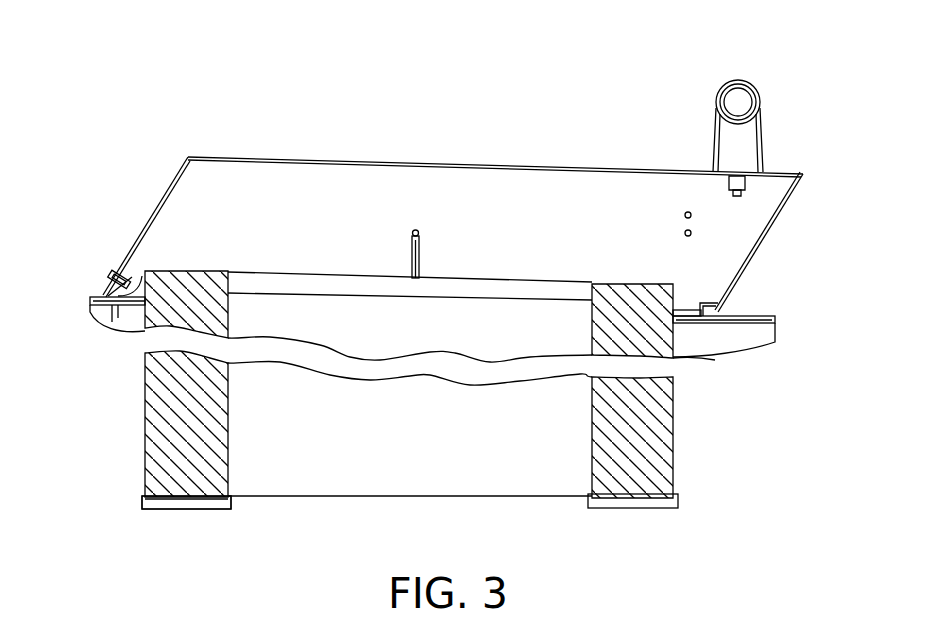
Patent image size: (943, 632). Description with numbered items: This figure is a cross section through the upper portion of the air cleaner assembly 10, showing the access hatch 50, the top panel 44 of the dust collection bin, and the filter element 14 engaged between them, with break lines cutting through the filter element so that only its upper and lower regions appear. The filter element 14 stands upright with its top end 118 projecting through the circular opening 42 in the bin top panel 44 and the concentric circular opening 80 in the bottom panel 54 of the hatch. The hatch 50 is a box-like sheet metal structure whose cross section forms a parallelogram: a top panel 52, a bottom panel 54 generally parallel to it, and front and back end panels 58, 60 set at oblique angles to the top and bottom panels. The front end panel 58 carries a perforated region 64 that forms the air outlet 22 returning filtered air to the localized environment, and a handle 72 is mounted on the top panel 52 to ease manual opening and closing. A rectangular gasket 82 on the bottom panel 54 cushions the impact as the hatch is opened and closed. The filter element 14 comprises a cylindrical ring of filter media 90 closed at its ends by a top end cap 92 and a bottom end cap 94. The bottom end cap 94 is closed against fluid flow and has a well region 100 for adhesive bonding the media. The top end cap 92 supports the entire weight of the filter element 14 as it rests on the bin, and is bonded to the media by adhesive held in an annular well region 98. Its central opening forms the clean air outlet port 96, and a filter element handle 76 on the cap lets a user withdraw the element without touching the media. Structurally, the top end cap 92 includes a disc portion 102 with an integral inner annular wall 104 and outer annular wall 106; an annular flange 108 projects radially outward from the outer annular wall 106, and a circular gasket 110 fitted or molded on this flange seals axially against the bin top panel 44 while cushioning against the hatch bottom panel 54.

The air cleaner assembly 10 is at (588, 75).
The filter element 14 is at (679, 478).
The air outlet 22 is at (772, 247).
The circular opening 42 is at (688, 320).
The top panel 44 is at (772, 318).
The access hatch 50 is at (394, 157).
The top panel 52 is at (550, 166).
The bottom panel 54 is at (142, 283).
The front end panel 58 is at (793, 197).
The back end panel 60 is at (173, 178).
The perforated region 64 is at (778, 223).
The handle 72 is at (722, 88).
The filter element handle 76 is at (416, 230).
The circular opening 80 is at (696, 290).
The rectangular gasket 82 is at (103, 297).
The filter media 90 is at (146, 366).
The top end cap 92 is at (164, 270).
The bottom end cap 94 is at (177, 512).
The clean air outlet port 96 is at (278, 273).
The annular well region 98 is at (148, 282).
The well region 100 is at (198, 532).
The disc portion 102 is at (634, 283).
The inner annular wall 104 is at (574, 289).
The outer annular wall 106 is at (695, 294).
The annular flange 108 is at (700, 314).
The circular gasket 110 is at (701, 315).
The top end 118 is at (201, 256).